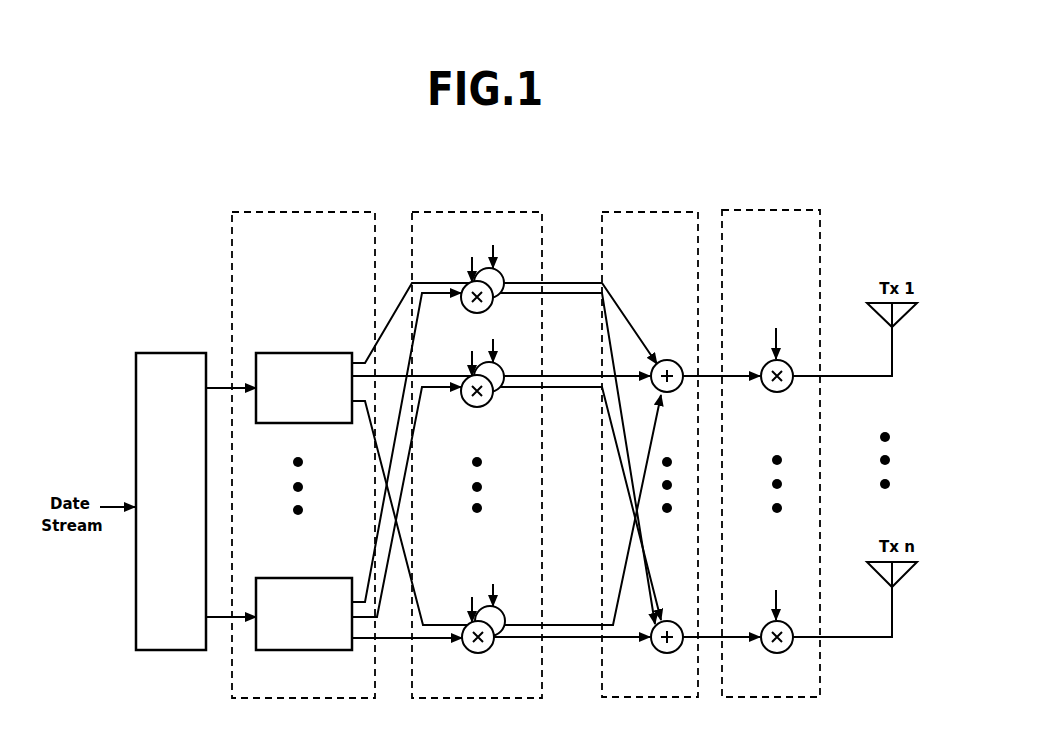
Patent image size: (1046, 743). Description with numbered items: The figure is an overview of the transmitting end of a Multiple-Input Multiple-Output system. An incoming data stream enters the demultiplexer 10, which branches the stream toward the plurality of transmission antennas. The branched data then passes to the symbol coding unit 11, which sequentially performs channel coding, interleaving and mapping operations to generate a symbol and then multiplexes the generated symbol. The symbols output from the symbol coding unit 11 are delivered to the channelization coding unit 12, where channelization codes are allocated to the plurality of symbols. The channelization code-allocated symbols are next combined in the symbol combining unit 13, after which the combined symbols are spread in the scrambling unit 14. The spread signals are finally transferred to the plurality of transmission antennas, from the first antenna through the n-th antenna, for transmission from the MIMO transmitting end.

The demultiplexer 10 is at (174, 353).
The symbol coding unit 11 is at (294, 212).
The channelization coding unit 12 is at (472, 212).
The symbol combining unit 13 is at (638, 212).
The scrambling unit 14 is at (770, 210).